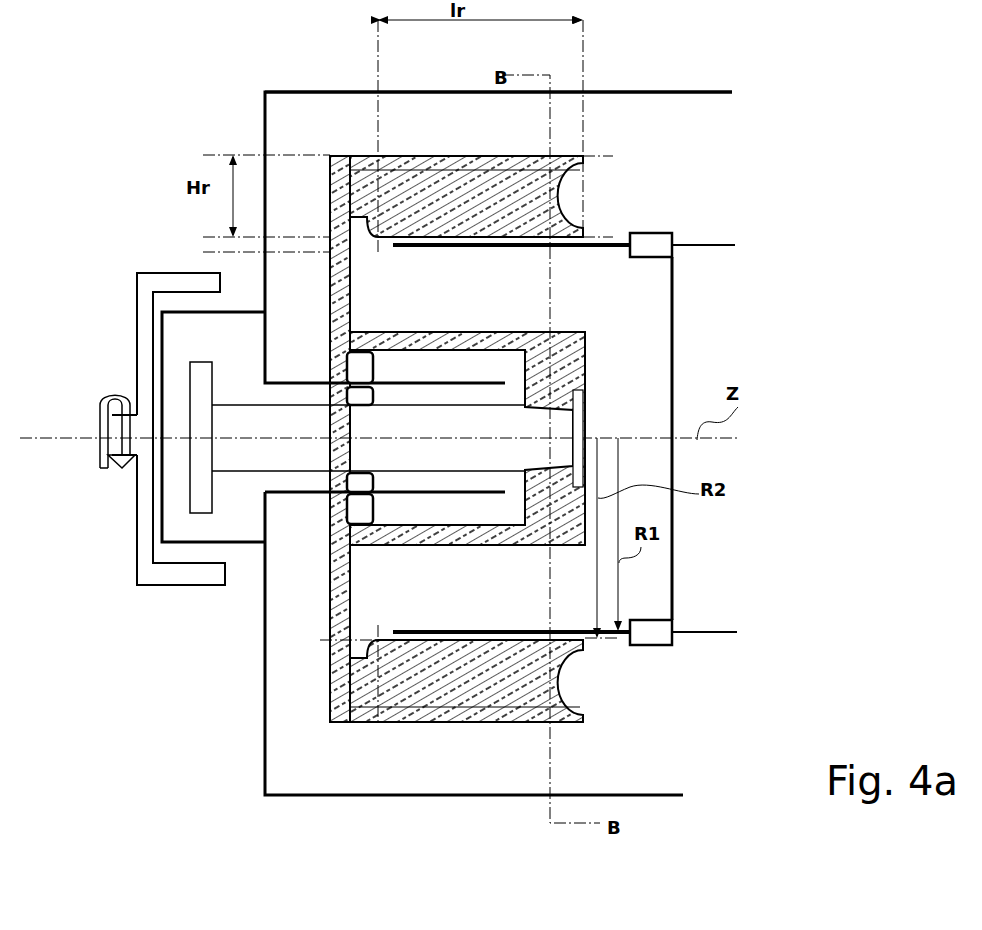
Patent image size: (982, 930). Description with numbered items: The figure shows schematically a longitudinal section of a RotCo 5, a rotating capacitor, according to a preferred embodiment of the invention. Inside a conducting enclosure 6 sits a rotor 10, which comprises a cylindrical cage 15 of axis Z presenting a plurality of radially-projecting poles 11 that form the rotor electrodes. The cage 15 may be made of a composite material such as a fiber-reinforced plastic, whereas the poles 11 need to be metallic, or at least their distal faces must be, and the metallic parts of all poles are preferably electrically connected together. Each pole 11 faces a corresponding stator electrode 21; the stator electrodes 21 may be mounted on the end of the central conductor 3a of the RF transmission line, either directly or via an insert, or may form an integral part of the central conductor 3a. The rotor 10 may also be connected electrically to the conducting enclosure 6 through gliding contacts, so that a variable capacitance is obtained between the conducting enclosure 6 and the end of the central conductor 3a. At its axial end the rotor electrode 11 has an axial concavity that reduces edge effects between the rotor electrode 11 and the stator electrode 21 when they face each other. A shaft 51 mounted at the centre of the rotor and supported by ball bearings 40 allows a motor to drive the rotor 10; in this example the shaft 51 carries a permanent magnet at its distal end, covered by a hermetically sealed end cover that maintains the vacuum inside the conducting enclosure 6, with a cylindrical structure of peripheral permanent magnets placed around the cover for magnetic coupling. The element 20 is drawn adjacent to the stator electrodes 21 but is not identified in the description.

The RotCo 5 is at (228, 97).
The conducting enclosure 6 is at (607, 91).
The central conductor 3a is at (710, 293).
The rotor 10 is at (586, 341).
The pole 11 is at (437, 192).
The cylindrical cage 15 is at (357, 163).
The stator coil end 20 is at (651, 236).
The stator electrode 21 is at (440, 248).
The ball bearings 40 is at (350, 503).
The shaft 51 is at (467, 453).